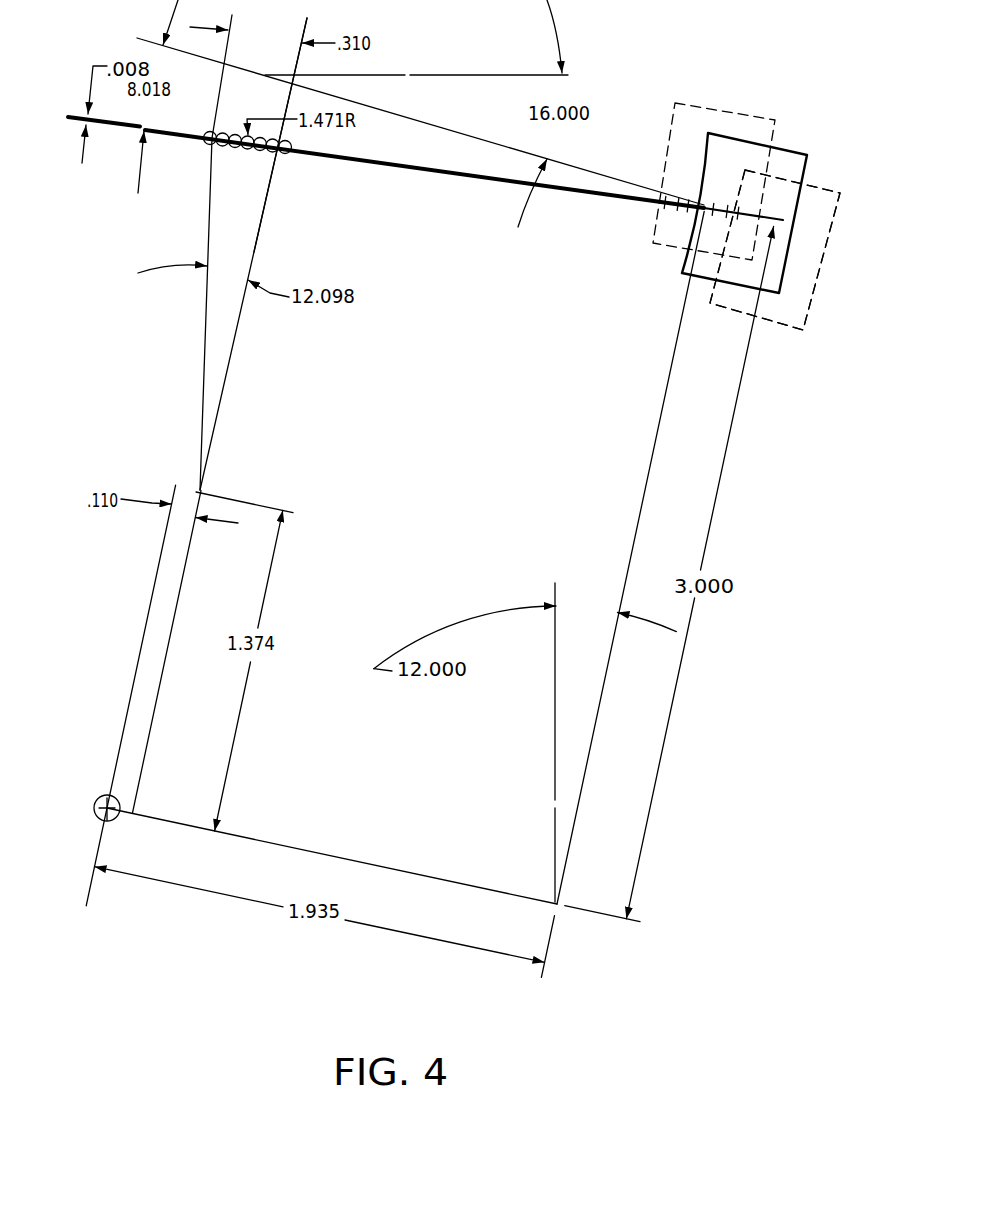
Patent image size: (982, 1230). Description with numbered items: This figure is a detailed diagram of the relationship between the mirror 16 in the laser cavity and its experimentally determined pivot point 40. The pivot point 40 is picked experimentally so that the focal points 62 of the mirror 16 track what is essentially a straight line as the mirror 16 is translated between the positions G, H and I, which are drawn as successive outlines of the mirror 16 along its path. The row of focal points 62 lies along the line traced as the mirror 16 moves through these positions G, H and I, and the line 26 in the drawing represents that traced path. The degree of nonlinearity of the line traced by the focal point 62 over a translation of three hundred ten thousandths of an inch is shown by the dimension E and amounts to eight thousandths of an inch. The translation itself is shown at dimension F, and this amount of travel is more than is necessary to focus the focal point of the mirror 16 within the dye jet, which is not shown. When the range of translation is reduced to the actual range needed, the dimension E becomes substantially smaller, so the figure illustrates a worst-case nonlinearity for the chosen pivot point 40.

The mirror 16 is at (786, 312).
The cutting edge line 26 is at (577, 188).
The pivot point 40 is at (100, 796).
The focal points 62 is at (270, 153).
The dimension E is at (104, 84).
The dimension F is at (301, 135).
The position G is at (714, 171).
The position H is at (744, 209).
The position I is at (775, 246).